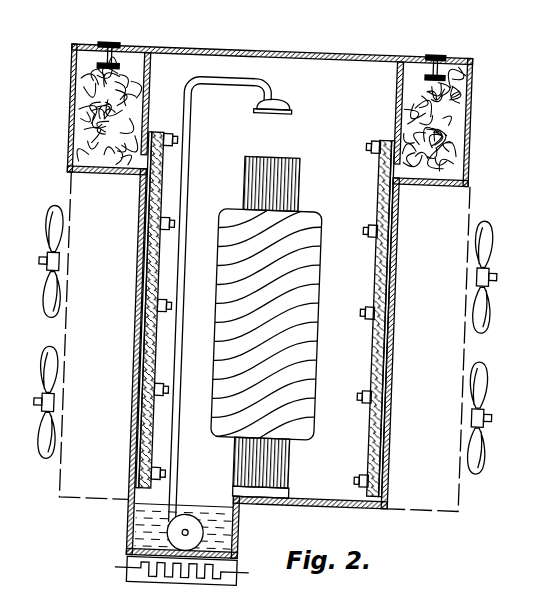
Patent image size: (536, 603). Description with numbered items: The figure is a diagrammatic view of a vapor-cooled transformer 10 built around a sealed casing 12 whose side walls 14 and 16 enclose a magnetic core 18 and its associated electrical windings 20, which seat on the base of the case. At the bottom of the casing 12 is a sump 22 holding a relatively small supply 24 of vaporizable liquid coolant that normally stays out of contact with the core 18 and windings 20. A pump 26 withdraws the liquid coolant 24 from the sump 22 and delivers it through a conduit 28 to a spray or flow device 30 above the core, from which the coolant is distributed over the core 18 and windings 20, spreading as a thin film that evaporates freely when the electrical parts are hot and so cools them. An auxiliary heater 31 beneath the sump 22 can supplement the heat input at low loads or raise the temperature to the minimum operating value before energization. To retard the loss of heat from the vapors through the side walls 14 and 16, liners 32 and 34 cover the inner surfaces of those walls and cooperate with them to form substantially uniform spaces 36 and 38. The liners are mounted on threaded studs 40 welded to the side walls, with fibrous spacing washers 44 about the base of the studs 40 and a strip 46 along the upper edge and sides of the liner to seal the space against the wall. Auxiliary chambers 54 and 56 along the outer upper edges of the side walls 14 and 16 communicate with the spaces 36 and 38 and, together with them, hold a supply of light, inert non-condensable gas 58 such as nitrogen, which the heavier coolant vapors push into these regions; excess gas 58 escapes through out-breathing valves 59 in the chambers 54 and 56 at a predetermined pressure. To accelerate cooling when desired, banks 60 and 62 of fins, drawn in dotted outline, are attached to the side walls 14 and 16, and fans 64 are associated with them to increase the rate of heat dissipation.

The transformer 10 is at (349, 522).
The sealed casing 12 is at (390, 497).
The side wall 14 is at (156, 292).
The side wall 16 is at (400, 355).
The magnetic core 18 is at (304, 168).
The electrical windings 20 is at (324, 263).
The sump 22 is at (254, 497).
The supply of vaporizable liquid coolant 24 is at (153, 526).
The pump 26 is at (212, 516).
The conduit 28 is at (194, 138).
The spray or flow device 30 is at (286, 93).
The auxiliary heater 31 is at (170, 570).
The liner 32 is at (154, 244).
The liner 34 is at (400, 235).
The space 36 is at (154, 265).
The space 38 is at (398, 261).
The threaded studs 40 is at (182, 216).
The washers 44 is at (158, 305).
The strip 46 is at (157, 130).
The auxiliary chamber 54 is at (75, 66).
The auxiliary chamber 56 is at (477, 130).
The non-condensable gas 58 is at (80, 108).
The out-breathing valves 59 is at (111, 40).
The bank of fins 60 is at (80, 188).
The bank of fins 62 is at (471, 189).
The fans 64 is at (57, 234).